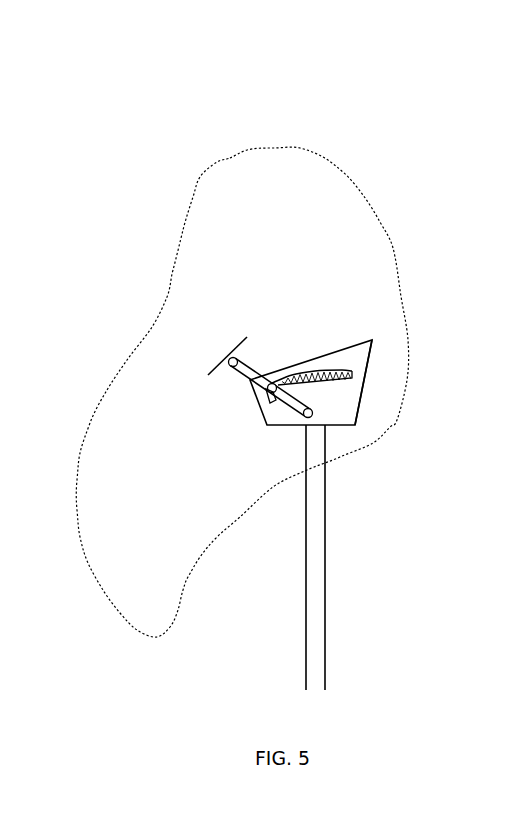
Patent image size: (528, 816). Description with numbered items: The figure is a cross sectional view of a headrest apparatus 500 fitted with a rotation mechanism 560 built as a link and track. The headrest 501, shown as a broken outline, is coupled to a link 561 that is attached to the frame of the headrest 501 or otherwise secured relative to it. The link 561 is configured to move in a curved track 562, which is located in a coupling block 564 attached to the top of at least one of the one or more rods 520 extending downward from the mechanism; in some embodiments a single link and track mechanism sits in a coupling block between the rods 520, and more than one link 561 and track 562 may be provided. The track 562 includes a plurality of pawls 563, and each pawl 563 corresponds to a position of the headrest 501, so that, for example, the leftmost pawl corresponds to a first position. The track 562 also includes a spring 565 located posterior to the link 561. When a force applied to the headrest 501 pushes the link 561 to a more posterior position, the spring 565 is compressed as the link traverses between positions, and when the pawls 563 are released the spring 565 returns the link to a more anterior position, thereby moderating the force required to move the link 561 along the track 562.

The headrest apparatus 500 is at (255, 97).
The headrest 501 is at (303, 200).
The rods 520 is at (325, 538).
The rotation mechanism 560 is at (256, 301).
The link 561 is at (250, 378).
The track 562 is at (345, 368).
The pawls 563 is at (305, 361).
The coupling block 564 is at (357, 405).
The spring 565 is at (358, 376).